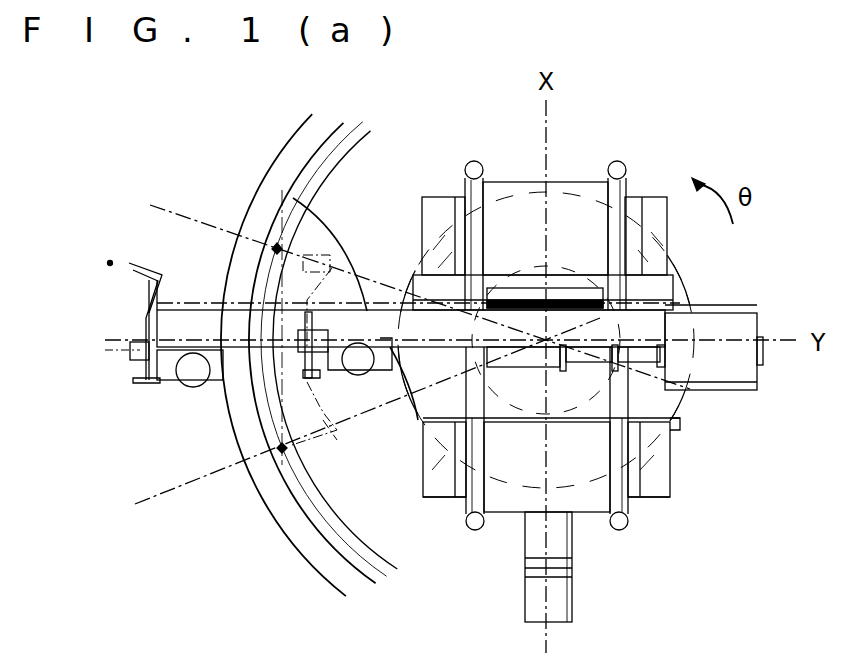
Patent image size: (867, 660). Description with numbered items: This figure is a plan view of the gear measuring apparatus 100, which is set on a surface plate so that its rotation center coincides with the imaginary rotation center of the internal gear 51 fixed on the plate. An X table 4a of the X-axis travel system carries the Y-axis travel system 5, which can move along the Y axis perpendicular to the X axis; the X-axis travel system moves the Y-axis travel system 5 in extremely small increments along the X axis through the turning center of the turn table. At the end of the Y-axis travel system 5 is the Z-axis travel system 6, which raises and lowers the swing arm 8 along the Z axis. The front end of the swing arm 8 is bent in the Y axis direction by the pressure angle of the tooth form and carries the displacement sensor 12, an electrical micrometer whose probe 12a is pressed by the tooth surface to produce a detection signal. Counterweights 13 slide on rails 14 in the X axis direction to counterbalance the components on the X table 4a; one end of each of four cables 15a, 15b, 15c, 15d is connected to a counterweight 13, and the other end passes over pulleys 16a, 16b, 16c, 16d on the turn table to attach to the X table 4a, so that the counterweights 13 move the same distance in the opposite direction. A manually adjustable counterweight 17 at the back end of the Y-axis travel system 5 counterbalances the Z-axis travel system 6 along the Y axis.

The X table 4a is at (533, 400).
The Y-axis travel system 5 is at (292, 197).
The Z-axis travel system 6 is at (190, 388).
The swing arm 8 is at (137, 322).
The displacement sensor 12 is at (136, 268).
The probe 12a is at (137, 269).
The counterweight 13 is at (421, 412).
The rail 14 is at (427, 200).
The cable 15a is at (626, 463).
The cable 15b is at (637, 207).
The cable 15c is at (467, 510).
The cable 15d is at (427, 200).
The pulley 16a is at (620, 530).
The pulley 16b is at (617, 161).
The pulley 16c is at (470, 528).
The pulley 16d is at (474, 161).
The counterweight 17 is at (732, 312).
The internal gear 51 is at (288, 552).
The gear measuring apparatus 100 is at (692, 130).